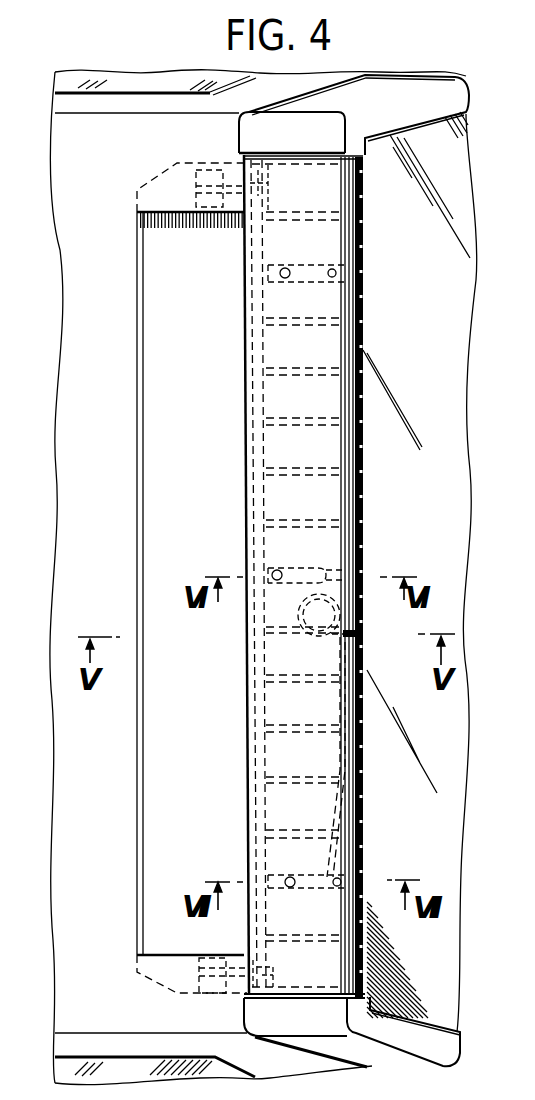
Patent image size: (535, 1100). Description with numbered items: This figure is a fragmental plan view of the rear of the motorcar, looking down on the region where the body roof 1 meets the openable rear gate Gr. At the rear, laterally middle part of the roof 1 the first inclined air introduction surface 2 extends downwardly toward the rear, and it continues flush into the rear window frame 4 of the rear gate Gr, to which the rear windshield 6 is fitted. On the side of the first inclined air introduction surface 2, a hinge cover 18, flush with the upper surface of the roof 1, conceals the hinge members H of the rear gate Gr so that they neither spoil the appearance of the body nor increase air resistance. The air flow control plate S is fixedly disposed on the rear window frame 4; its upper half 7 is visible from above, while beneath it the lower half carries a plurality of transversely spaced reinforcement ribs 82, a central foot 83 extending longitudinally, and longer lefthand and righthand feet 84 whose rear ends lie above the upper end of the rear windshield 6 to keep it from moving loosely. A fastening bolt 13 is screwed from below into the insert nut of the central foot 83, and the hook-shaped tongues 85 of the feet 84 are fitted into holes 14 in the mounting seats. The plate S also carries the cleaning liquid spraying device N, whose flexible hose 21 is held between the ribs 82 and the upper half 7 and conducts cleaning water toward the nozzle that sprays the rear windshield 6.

The body roof 1 is at (98, 447).
The first inclined air introduction surface 2 is at (200, 447).
The rear window frame 4 is at (455, 1040).
The rear windshield 6 is at (458, 418).
The upper half 7 is at (362, 322).
The fastening bolt 13 is at (279, 585).
The holes 14 is at (330, 283).
The hinge covers 18 is at (162, 203).
The flexible hose 21 is at (340, 712).
The reinforcement ribs 82 is at (312, 416).
The central foot 83 is at (296, 567).
The lefthand and righthand feet 84 is at (303, 265).
The hook-shaped tongue 85 is at (283, 280).
The rear gate Gr is at (456, 78).
The hinge members H is at (266, 965).
The cleaning liquid spraying device N is at (371, 638).
The air flow control plate S is at (366, 531).